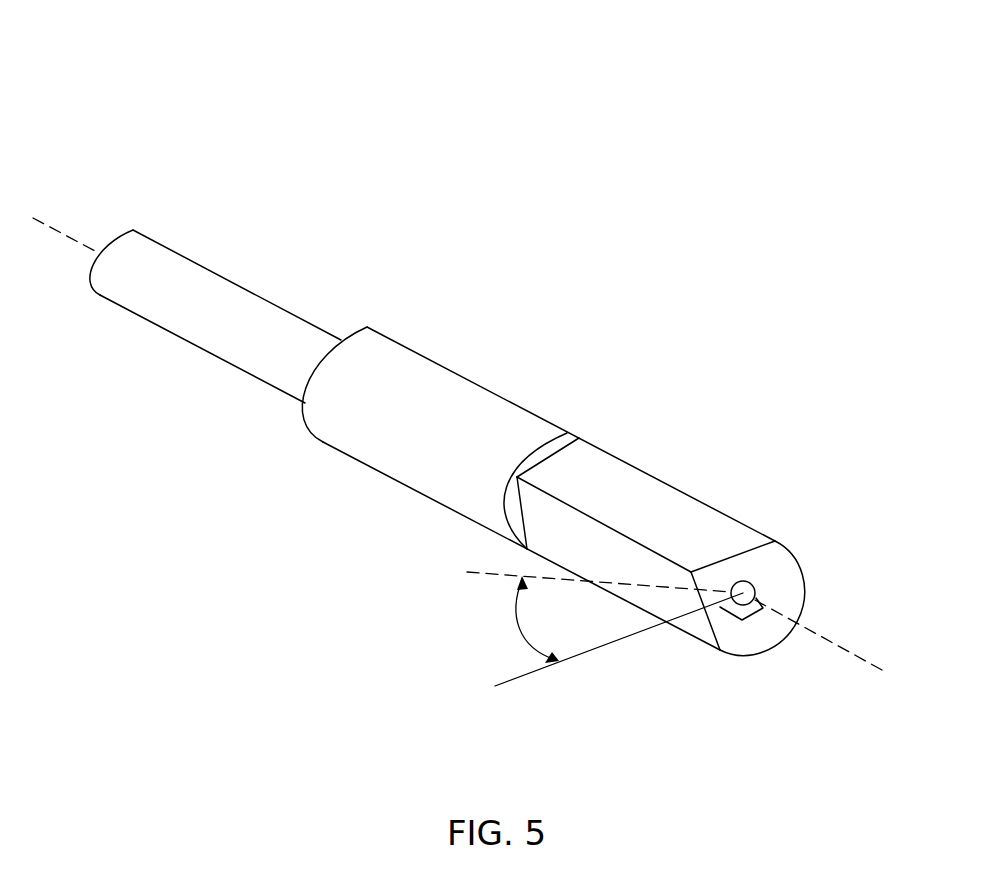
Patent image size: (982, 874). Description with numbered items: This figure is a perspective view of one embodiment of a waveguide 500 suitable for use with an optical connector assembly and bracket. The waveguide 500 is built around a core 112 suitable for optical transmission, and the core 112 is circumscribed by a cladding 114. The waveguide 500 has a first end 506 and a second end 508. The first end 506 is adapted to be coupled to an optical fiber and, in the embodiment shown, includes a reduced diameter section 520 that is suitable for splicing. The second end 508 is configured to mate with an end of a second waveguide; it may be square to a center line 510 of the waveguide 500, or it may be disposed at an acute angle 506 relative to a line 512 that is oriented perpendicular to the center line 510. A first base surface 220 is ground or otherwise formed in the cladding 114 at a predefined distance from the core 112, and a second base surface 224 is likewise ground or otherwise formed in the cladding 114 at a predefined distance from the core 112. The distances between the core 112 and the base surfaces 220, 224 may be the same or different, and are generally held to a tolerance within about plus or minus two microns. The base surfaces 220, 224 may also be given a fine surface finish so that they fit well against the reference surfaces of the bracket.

The waveguide 500 is at (458, 129).
The first end 506 is at (108, 238).
The reduced diameter section 520 is at (212, 308).
The first base surface 220 is at (547, 538).
The second base surface 224 is at (618, 480).
The core 112 is at (745, 581).
The second end 508 is at (777, 572).
The cladding 114 is at (784, 597).
The center line 510 is at (837, 645).
The line 512 is at (623, 643).